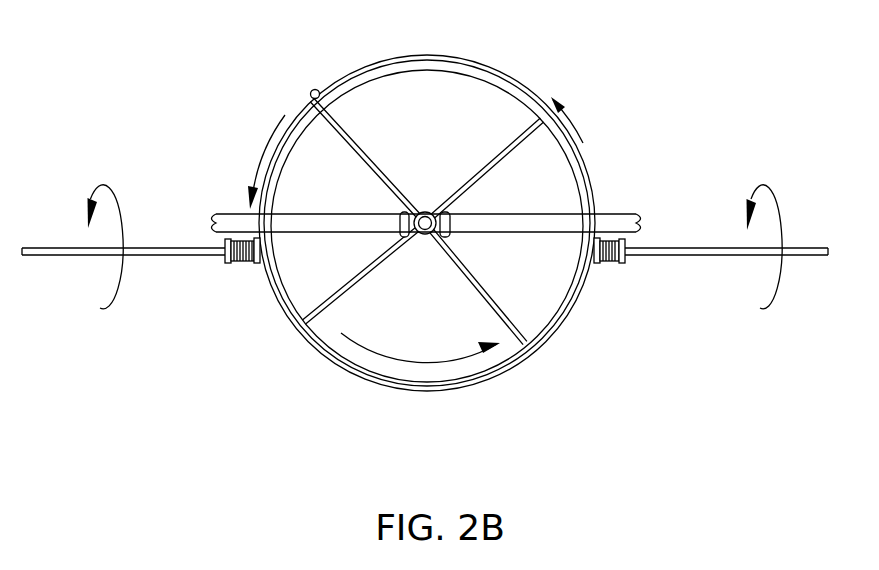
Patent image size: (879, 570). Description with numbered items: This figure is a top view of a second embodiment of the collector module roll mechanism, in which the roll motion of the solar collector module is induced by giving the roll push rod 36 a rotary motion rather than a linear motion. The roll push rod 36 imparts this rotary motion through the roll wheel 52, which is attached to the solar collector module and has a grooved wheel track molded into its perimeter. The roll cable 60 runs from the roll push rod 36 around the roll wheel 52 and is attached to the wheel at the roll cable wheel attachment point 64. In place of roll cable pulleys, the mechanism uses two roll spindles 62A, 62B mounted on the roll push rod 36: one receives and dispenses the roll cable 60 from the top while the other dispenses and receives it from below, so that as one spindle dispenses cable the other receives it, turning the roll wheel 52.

The roll push rod 36 is at (806, 249).
The roll wheel 52 is at (432, 56).
The roll cable 60 is at (573, 129).
The roll spindle 62A is at (624, 263).
The roll spindle 62B is at (245, 263).
The roll cable wheel attachment point 64 is at (313, 89).